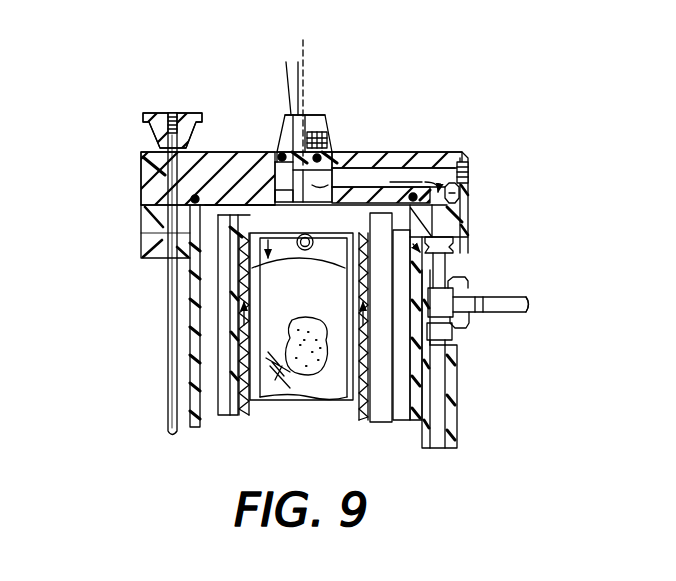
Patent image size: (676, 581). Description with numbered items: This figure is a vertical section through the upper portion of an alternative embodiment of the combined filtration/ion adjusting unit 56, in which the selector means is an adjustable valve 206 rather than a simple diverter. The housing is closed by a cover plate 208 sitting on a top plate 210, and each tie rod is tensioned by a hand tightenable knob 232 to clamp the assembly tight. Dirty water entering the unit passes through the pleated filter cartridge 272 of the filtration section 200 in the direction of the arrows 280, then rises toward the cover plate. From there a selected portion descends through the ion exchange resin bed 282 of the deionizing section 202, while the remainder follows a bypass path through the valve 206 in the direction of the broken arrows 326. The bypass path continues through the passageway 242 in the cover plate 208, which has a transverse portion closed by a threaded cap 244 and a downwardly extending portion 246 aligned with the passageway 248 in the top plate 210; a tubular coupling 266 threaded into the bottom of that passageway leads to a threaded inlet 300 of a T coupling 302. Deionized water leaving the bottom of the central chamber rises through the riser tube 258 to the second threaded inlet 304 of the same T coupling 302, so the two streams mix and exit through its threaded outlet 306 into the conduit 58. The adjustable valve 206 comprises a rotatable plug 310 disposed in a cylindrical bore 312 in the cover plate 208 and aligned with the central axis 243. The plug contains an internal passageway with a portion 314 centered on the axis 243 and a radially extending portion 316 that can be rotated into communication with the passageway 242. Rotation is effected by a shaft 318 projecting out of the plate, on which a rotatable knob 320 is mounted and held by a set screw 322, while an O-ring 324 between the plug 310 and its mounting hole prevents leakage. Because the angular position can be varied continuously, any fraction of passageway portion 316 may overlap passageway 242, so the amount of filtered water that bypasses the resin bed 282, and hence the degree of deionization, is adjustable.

The combined filtration/ion adjusting unit 56 is at (158, 379).
The conduit 58 is at (517, 304).
The filtration section 200 is at (231, 272).
The deionizing section 202 is at (338, 310).
The adjustable valve 206 is at (326, 114).
The cover plate 208 is at (145, 235).
The top plate 210 is at (150, 190).
The hand tightenable knob 232 is at (165, 114).
The passageway 242 is at (402, 175).
The central axis 243 is at (305, 65).
The threaded cap 244 is at (468, 172).
The downwardly extending passageway portion 246 is at (460, 198).
The passageway 248 is at (442, 224).
The riser tube 258 is at (457, 417).
The tubular coupling 266 is at (450, 263).
The filter cartridge 272 is at (233, 396).
The arrows 280 is at (238, 378).
The ion exchange resin bed 282 is at (298, 363).
The threaded inlet 300 is at (457, 275).
The T coupling 302 is at (463, 318).
The second threaded inlet 304 is at (467, 332).
The threaded outlet 306 is at (475, 292).
The rotatable plug 310 is at (292, 198).
The cylindrical bore 312 is at (318, 177).
The passageway portion 314 is at (277, 200).
The radially extending passageway portion 316 is at (333, 150).
The shaft 318 is at (287, 74).
The rotatable knob 320 is at (285, 114).
The set screw 322 is at (315, 138).
The O-ring 324 is at (276, 152).
The broken arrows 326 is at (312, 251).